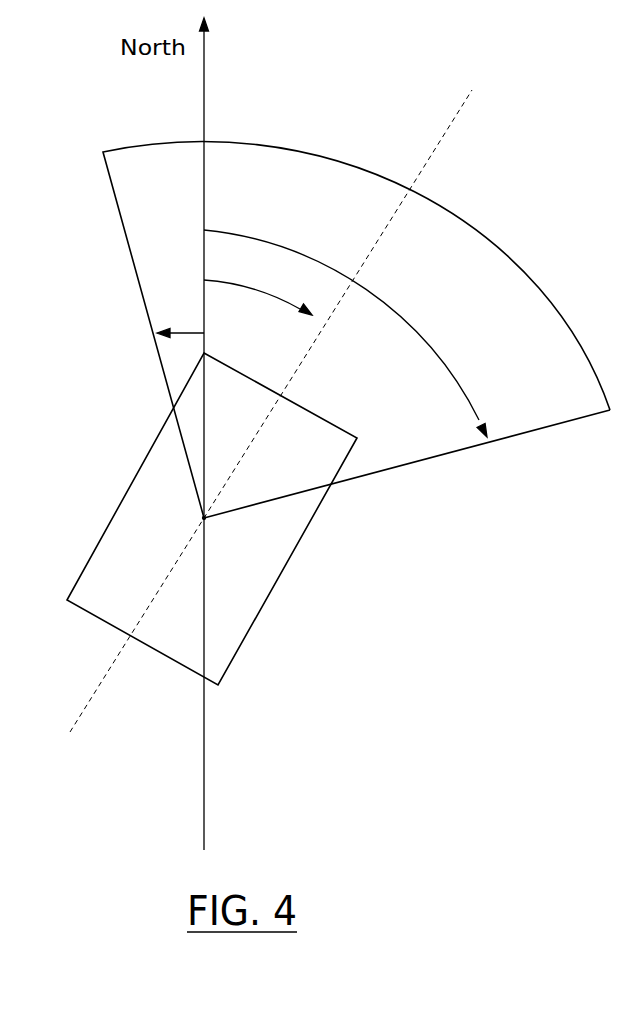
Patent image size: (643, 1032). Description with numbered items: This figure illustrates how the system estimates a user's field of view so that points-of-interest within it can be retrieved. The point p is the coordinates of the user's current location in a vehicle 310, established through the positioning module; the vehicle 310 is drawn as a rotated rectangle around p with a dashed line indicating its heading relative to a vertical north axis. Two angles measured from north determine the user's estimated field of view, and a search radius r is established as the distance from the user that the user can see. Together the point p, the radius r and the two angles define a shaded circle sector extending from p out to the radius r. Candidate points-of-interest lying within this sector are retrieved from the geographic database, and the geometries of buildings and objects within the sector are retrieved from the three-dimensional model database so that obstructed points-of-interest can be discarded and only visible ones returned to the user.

The vehicle 310 is at (243, 519).
The coordinates of the user's current location p is at (215, 538).
The search radius r is at (407, 464).